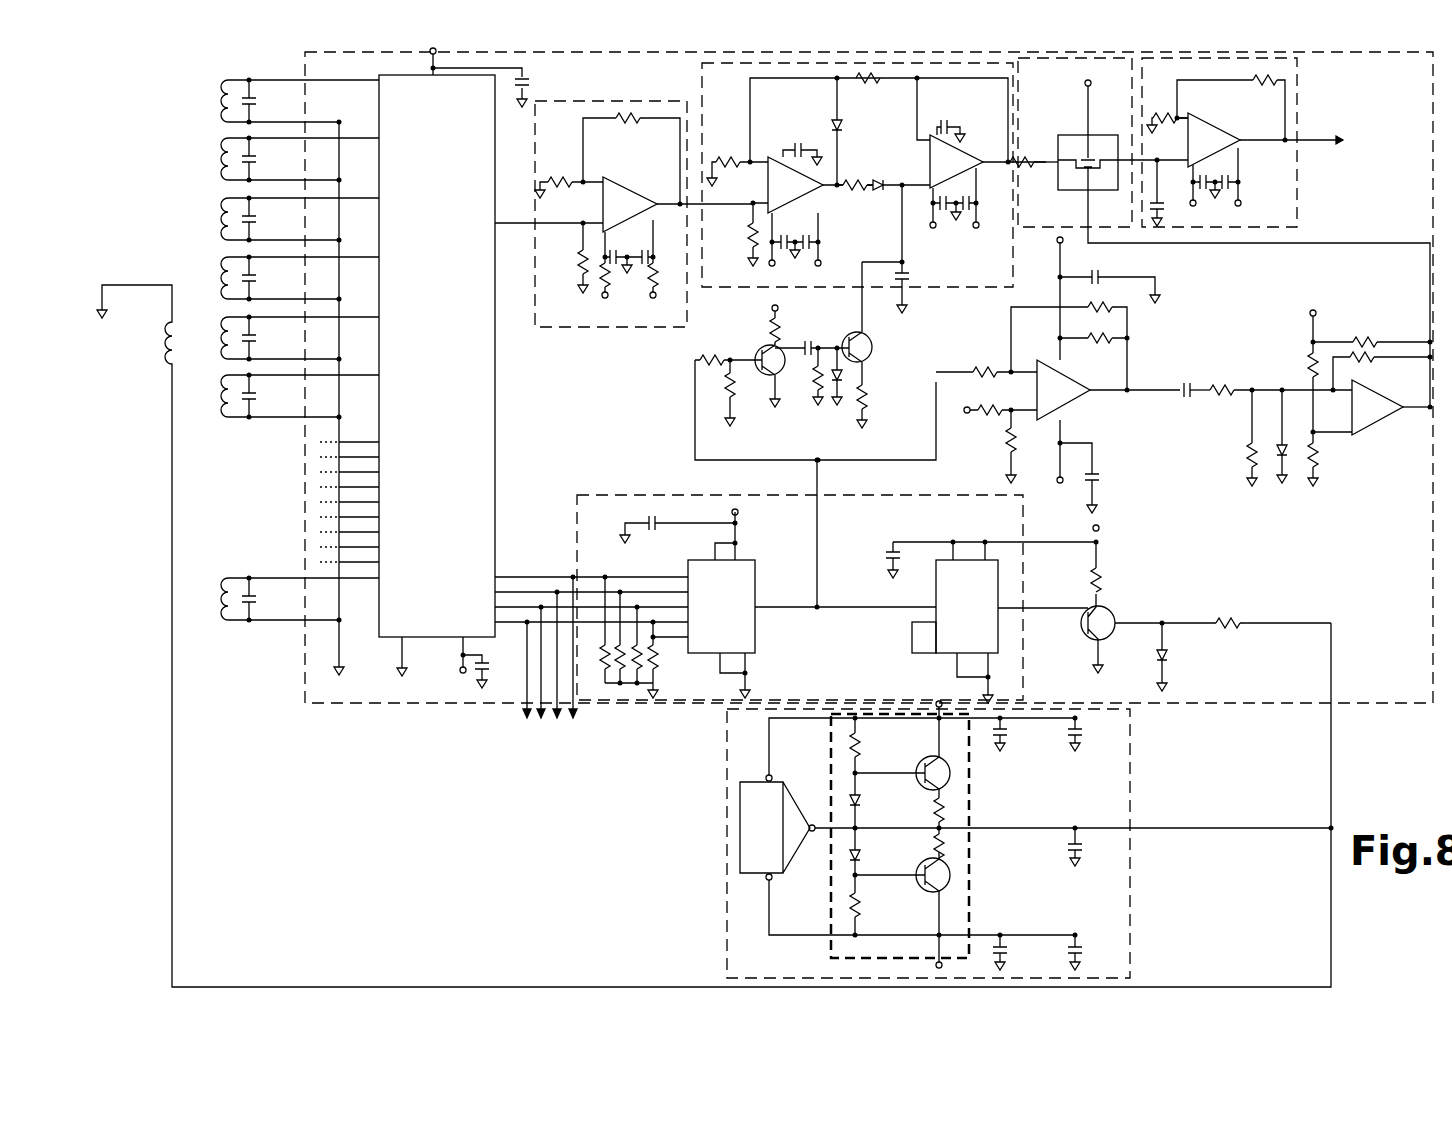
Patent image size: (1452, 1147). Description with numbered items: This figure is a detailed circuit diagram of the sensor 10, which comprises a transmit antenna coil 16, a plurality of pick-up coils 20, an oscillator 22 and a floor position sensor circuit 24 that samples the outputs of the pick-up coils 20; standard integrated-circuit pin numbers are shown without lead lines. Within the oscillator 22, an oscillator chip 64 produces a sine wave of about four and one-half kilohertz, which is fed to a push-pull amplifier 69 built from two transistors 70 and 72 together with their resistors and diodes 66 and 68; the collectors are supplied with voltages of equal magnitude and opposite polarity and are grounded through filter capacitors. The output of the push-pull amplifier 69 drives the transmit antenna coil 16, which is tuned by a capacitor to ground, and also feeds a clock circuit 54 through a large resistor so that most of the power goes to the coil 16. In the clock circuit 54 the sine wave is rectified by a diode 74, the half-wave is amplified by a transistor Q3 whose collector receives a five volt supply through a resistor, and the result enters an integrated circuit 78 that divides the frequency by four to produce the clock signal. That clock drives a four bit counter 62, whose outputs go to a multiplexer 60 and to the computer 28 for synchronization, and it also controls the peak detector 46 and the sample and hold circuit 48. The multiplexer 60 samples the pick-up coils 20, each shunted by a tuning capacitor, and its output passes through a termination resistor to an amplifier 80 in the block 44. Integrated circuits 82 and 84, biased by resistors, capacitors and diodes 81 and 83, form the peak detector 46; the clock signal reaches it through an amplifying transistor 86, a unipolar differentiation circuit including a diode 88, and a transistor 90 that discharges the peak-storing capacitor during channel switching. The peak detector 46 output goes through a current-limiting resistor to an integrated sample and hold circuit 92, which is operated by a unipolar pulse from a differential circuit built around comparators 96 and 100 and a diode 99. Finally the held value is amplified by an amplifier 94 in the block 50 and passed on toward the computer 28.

The sensor 10 is at (125, 723).
The transmit antenna coil 16 is at (162, 334).
The pick-up coils 20 is at (212, 88).
The oscillator 22 is at (1134, 805).
The floor position sensor circuit 24 is at (1356, 704).
The computer 28 is at (955, 448).
The preamplifier stage 44 is at (578, 100).
The peak detector 46 is at (695, 73).
The sample and hold circuit 48 is at (1070, 69).
The output amplifier stage 50 is at (1296, 88).
The clock circuit 54 is at (862, 492).
The multiplexer 60 is at (447, 299).
The four bit counter 62 is at (729, 617).
The oscillator chip 64 is at (769, 865).
The diode 66 is at (866, 800).
The diode 68 is at (866, 853).
The push-pull amplifier 69 is at (970, 812).
The transistor 70 is at (902, 758).
The transistor 72 is at (902, 893).
The diode 74 is at (1172, 657).
The integrated circuit 78 is at (976, 613).
The amplifier 80 is at (639, 213).
The diode 81 is at (847, 131).
The integrated circuit 82 is at (802, 193).
The diode 83 is at (898, 212).
The integrated circuit 84 is at (963, 171).
The transistor 86 is at (768, 347).
The diode 88 is at (848, 376).
The transistor 90 is at (862, 335).
The integrated sample and hold circuit 92 is at (1087, 153).
The amplifier 94 is at (1217, 148).
The integrated circuit 96 is at (1067, 398).
The diode 99 is at (1273, 452).
The integrated circuit 100 is at (1383, 415).
The transistor Q3 is at (1123, 597).